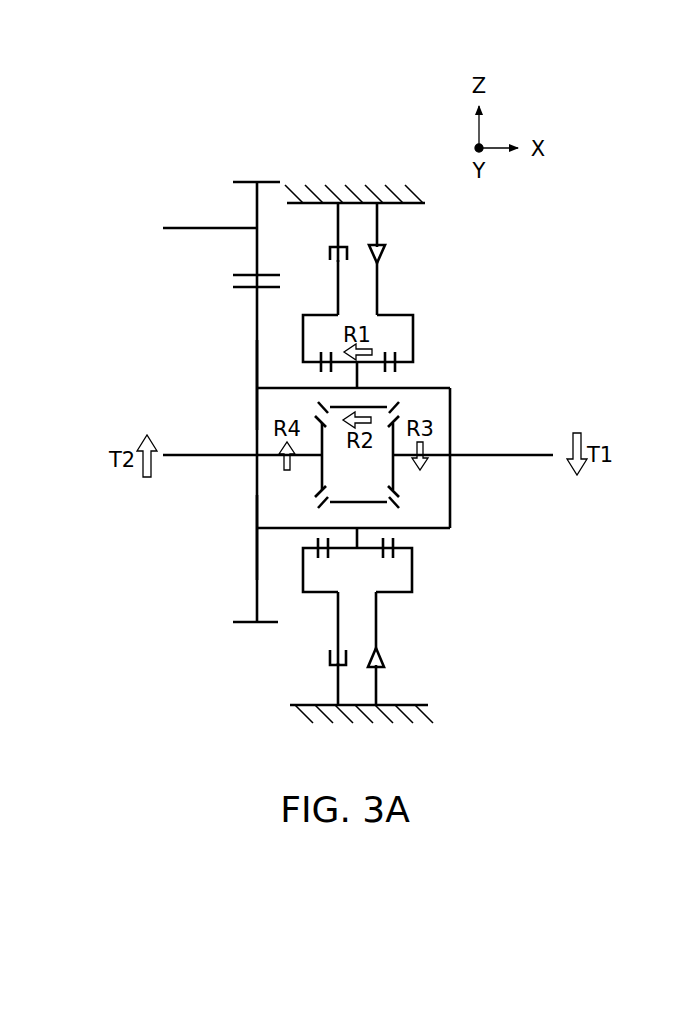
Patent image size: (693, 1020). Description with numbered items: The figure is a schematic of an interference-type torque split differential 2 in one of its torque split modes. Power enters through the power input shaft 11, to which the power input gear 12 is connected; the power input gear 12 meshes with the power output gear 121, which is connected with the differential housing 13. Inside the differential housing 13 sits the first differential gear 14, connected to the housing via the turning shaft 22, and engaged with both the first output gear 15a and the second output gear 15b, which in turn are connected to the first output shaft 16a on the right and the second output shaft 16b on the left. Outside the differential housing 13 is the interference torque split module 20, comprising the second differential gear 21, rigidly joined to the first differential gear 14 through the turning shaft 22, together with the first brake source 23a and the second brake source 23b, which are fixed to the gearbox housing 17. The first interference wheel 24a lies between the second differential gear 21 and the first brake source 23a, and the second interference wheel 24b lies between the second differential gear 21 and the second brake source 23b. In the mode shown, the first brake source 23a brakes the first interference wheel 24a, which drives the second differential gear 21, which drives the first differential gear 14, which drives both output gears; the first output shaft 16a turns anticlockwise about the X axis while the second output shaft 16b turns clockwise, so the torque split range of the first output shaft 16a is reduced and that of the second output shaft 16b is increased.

The interference-type torque split differential 2 is at (178, 135).
The power input shaft 11 is at (205, 228).
The power input gear 12 is at (257, 202).
The power output gear 121 is at (256, 357).
The differential housing 13 is at (295, 388).
The first differential gear 14 is at (383, 398).
The first output gear 15a is at (397, 477).
The second output gear 15b is at (318, 470).
The first output shaft 16a is at (468, 453).
The second output shaft 16b is at (229, 453).
The gearbox housing 17 is at (423, 205).
The interference torque split module 20 is at (542, 313).
The second differential gear 21 is at (343, 370).
The turning shaft 22 is at (417, 532).
The first brake source 23a is at (380, 225).
The second brake source 23b is at (338, 225).
The first interference wheel 24a is at (377, 292).
The second interference wheel 24b is at (338, 290).